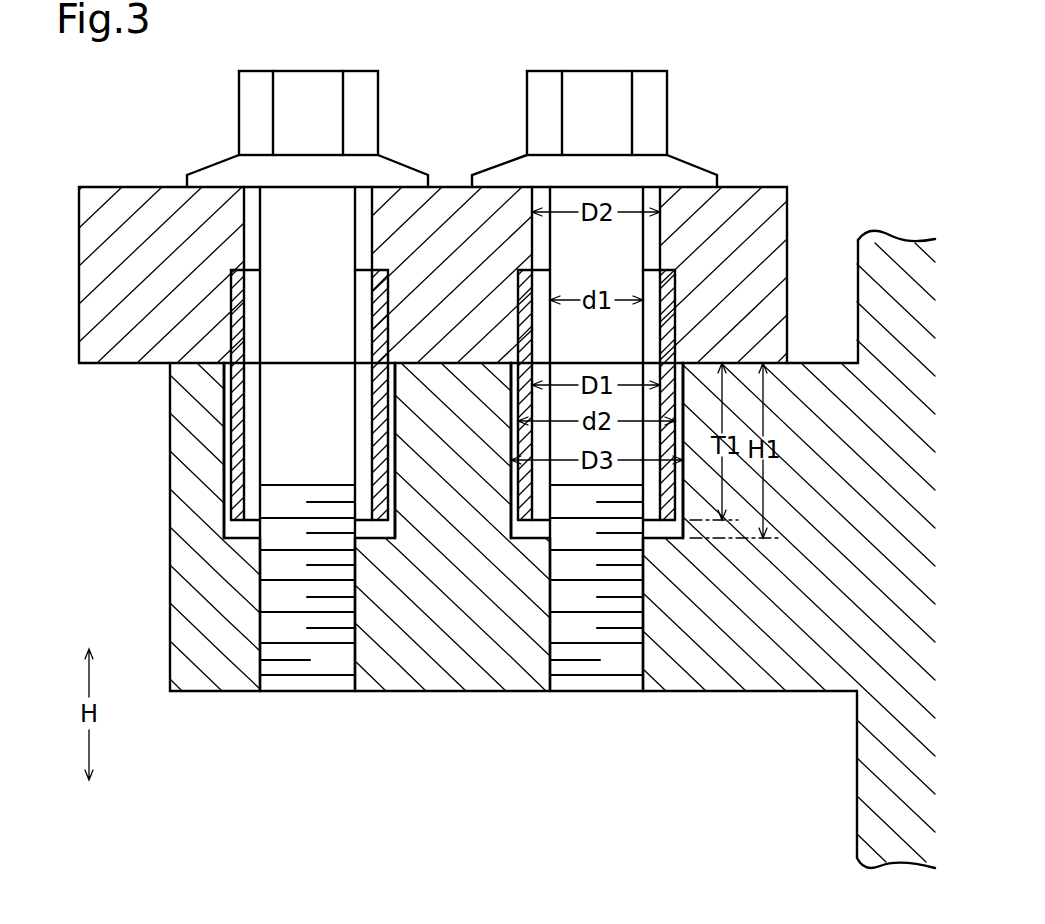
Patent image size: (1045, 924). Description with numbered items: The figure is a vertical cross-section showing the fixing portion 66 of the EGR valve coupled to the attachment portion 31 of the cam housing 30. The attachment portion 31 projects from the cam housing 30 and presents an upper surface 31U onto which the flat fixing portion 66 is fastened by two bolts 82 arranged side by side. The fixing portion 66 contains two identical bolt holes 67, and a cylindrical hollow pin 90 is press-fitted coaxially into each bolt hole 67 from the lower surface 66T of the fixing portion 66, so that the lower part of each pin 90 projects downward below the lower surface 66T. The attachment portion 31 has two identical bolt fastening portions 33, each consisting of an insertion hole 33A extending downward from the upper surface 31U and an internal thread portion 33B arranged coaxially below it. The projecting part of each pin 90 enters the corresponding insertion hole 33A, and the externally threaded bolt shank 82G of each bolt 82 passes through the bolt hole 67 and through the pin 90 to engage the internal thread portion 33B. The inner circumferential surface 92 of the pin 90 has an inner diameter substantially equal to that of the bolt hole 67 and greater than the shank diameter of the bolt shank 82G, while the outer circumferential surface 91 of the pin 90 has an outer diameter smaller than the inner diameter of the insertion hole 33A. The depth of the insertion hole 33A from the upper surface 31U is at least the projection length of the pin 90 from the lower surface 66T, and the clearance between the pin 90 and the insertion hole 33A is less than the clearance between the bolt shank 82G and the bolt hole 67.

The cam housing 30 is at (857, 772).
The attachment portion 31 is at (170, 541).
The upper surface of the attachment portion 31U is at (820, 363).
The bolt fastening portion 33 is at (395, 555).
The insertion hole 33A is at (224, 461).
The internal thread portion 33B is at (273, 668).
The fixing portion 66 is at (78, 250).
The lower surface of the fixing portion 66T is at (108, 365).
The bolt hole 67 is at (255, 243).
The bolt 82 is at (239, 122).
The bolt shank 82G is at (340, 243).
The pin 90 is at (384, 301).
The outer circumferential surface of the pin 91 is at (512, 405).
The inner circumferential surface of the pin 92 is at (368, 327).